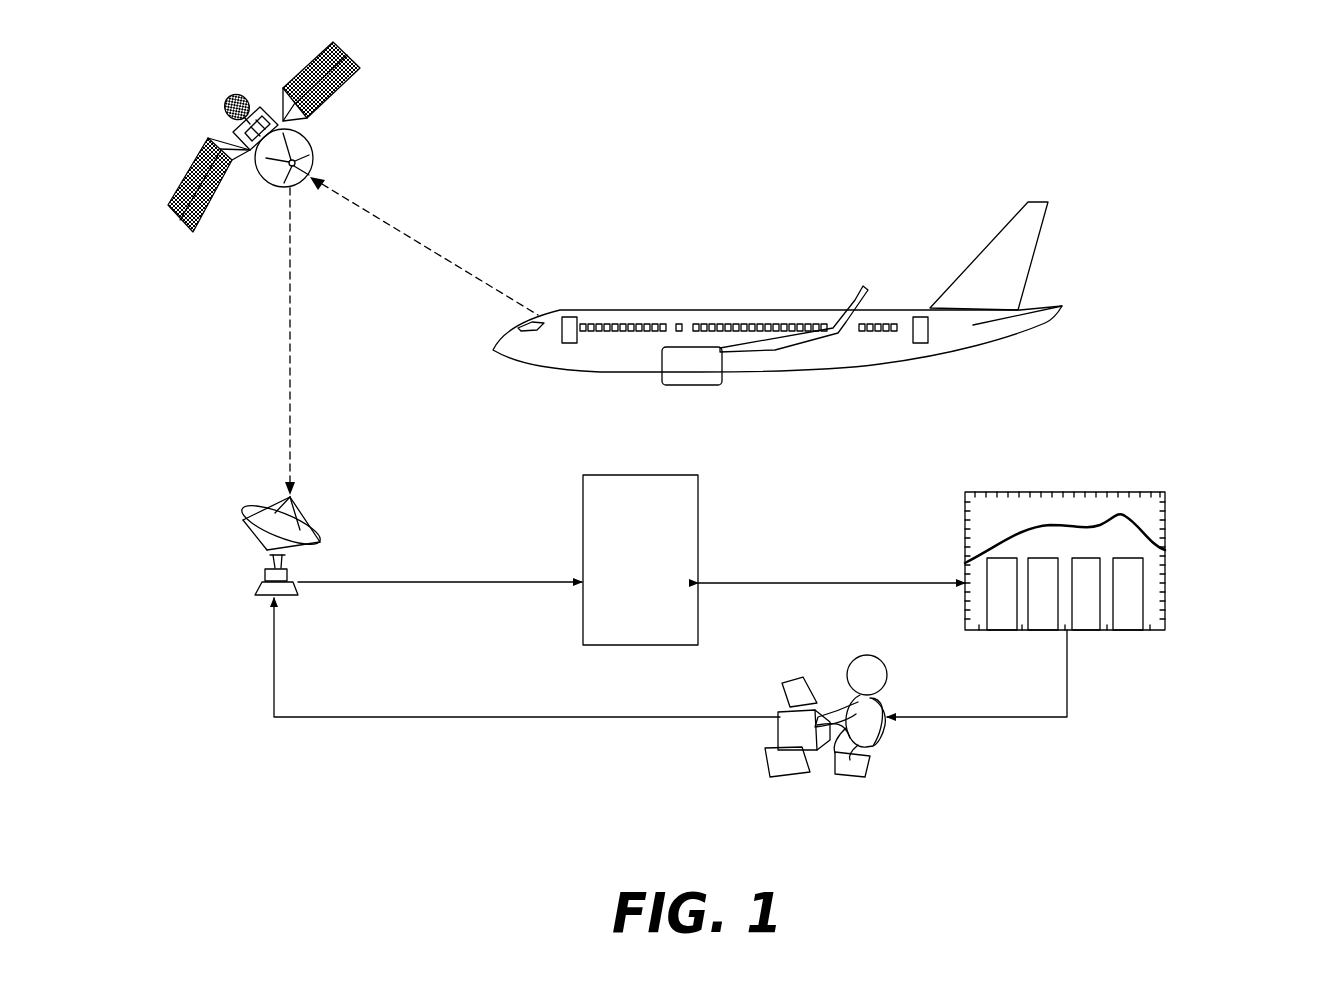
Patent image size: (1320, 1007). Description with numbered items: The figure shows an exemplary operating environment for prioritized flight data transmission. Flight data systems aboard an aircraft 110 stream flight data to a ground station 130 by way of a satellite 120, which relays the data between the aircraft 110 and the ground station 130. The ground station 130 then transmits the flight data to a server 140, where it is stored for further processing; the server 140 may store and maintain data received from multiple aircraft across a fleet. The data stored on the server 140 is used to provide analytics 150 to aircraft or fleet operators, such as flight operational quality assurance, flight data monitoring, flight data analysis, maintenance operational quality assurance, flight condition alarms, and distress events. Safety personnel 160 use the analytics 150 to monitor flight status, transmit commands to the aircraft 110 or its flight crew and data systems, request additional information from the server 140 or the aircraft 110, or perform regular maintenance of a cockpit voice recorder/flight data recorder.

The aircraft 110 is at (1032, 270).
The satellite 120 is at (230, 110).
The ground station 130 is at (255, 585).
The server 140 is at (698, 497).
The analytics 150 is at (1166, 535).
The safety personnel 160 is at (873, 768).